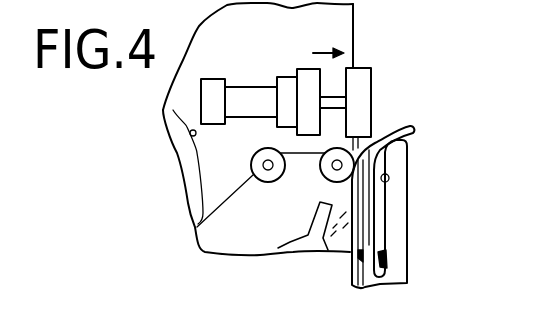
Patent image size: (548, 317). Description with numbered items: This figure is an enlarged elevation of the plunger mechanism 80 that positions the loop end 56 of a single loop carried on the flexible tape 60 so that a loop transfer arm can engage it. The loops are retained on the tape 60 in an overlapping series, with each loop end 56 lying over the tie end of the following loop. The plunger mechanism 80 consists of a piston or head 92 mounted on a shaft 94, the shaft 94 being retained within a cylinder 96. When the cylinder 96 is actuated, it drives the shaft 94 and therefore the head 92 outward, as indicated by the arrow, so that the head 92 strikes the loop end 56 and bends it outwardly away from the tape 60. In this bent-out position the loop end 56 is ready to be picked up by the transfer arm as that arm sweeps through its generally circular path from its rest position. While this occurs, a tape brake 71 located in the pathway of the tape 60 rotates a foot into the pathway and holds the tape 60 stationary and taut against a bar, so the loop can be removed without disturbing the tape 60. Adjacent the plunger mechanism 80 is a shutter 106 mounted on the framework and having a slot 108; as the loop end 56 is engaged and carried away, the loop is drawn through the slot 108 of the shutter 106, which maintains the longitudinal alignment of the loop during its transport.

The loop end 56 is at (412, 125).
The flexible tape 60 is at (219, 206).
The tape brake 71 is at (277, 251).
The plunger mechanism 80 is at (238, 85).
The head 92 is at (367, 80).
The shaft 94 is at (329, 90).
The cylinder 96 is at (252, 90).
The shutter 106 is at (400, 210).
The slot 108 is at (387, 172).